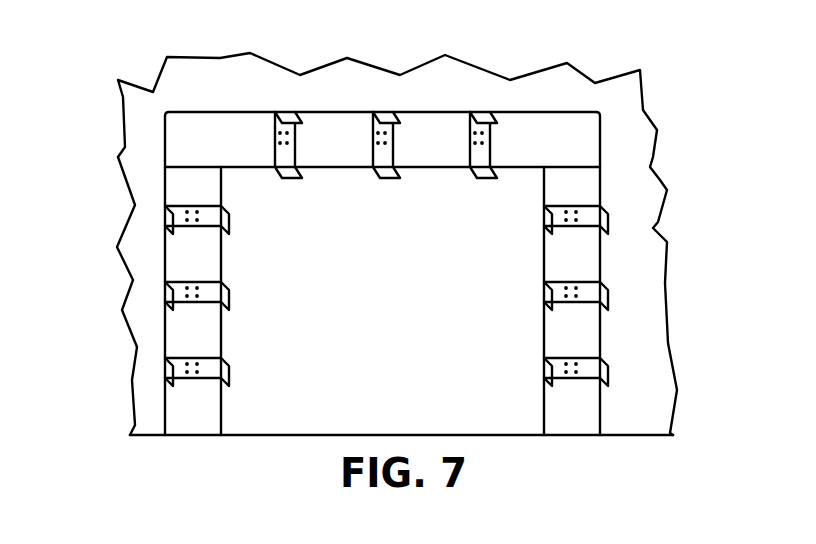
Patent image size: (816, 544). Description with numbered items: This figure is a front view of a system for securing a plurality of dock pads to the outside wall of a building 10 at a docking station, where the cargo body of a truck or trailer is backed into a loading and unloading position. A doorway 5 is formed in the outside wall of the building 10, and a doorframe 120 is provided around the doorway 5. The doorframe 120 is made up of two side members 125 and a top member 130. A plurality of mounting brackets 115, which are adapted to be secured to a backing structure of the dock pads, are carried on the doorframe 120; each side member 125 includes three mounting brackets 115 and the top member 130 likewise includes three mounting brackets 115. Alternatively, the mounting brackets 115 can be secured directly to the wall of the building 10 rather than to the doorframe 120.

The doorway 5 is at (368, 345).
The building 10 is at (563, 104).
The mounting brackets 115 is at (229, 374).
The doorframe 120 is at (132, 183).
The side members 125 is at (583, 187).
The top member 130 is at (192, 130).